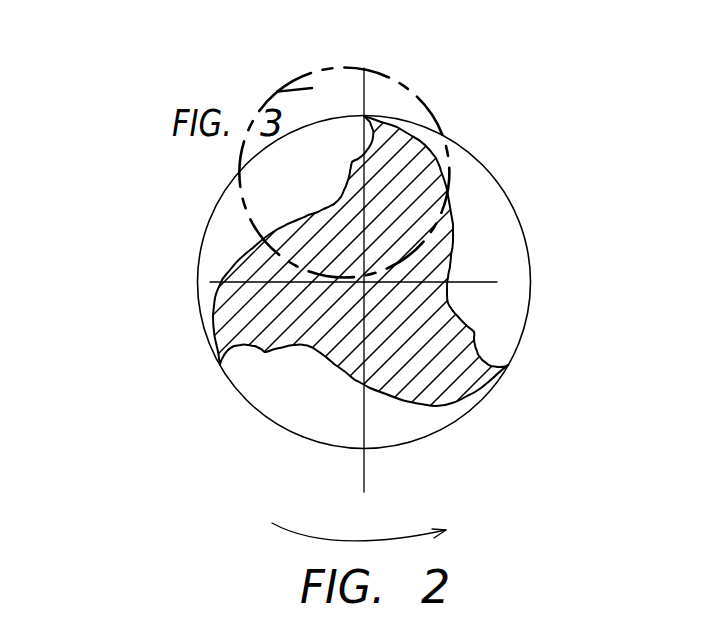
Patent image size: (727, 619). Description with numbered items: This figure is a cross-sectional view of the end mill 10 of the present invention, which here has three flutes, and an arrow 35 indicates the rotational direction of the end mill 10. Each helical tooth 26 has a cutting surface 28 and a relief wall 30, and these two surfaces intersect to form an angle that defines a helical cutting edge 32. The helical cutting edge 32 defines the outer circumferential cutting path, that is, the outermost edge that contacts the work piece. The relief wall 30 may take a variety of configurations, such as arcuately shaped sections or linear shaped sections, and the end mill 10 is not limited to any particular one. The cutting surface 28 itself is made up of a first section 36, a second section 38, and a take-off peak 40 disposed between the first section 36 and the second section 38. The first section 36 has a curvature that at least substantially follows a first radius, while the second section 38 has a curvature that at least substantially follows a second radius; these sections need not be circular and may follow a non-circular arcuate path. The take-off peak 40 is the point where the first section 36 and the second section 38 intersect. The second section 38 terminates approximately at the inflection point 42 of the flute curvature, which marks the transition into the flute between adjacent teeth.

The end mill 10 is at (171, 79).
The helical tooth 26 is at (401, 124).
The cutting surface 28 is at (327, 186).
The relief wall 30 is at (393, 118).
The helical cutting edge 32 is at (365, 113).
The arrow 35 is at (337, 540).
The first section 36 is at (481, 361).
The second section 38 is at (458, 298).
The take-off peak 40 is at (475, 332).
The inflection point 42 is at (447, 294).